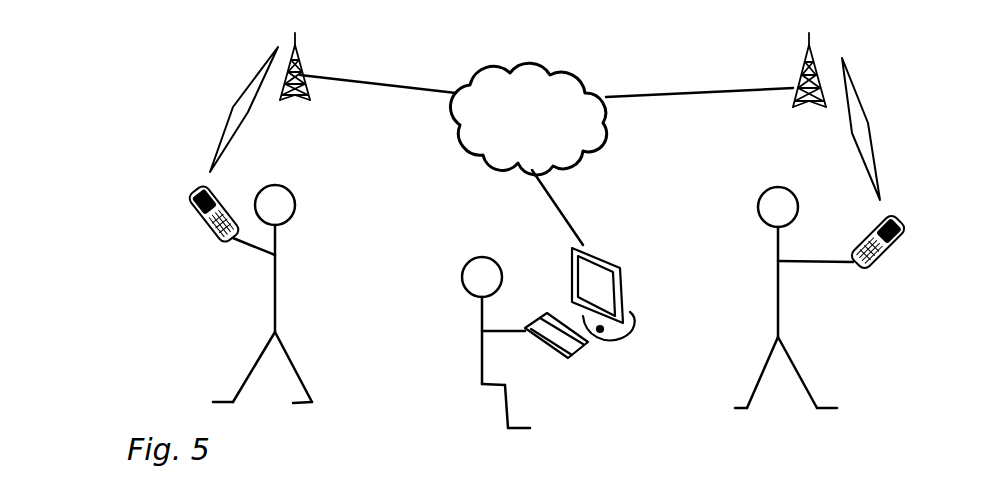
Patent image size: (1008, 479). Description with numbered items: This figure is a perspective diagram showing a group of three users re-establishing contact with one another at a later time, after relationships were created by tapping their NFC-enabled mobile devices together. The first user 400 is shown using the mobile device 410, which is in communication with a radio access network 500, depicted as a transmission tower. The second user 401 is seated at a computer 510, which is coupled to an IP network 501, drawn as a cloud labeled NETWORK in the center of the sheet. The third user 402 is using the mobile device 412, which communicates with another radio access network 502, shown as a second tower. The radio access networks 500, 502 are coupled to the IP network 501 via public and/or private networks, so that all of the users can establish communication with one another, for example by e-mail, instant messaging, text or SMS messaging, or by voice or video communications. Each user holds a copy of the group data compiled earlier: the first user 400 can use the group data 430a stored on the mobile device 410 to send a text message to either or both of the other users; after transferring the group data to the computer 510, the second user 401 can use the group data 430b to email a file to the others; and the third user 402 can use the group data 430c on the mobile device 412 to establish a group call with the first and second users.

The first user 400 is at (262, 352).
The second user 401 is at (480, 311).
The third user 402 is at (777, 243).
The NFC-enabled mobile device 410 is at (190, 222).
The NFC-enabled mobile device 412 is at (860, 240).
The group data 430a is at (200, 187).
The group data 430b is at (605, 342).
The group data 430c is at (895, 260).
The radio access network 500 is at (308, 98).
The IP network 501 is at (593, 155).
The radio access network 502 is at (792, 95).
The computer 510 is at (637, 335).